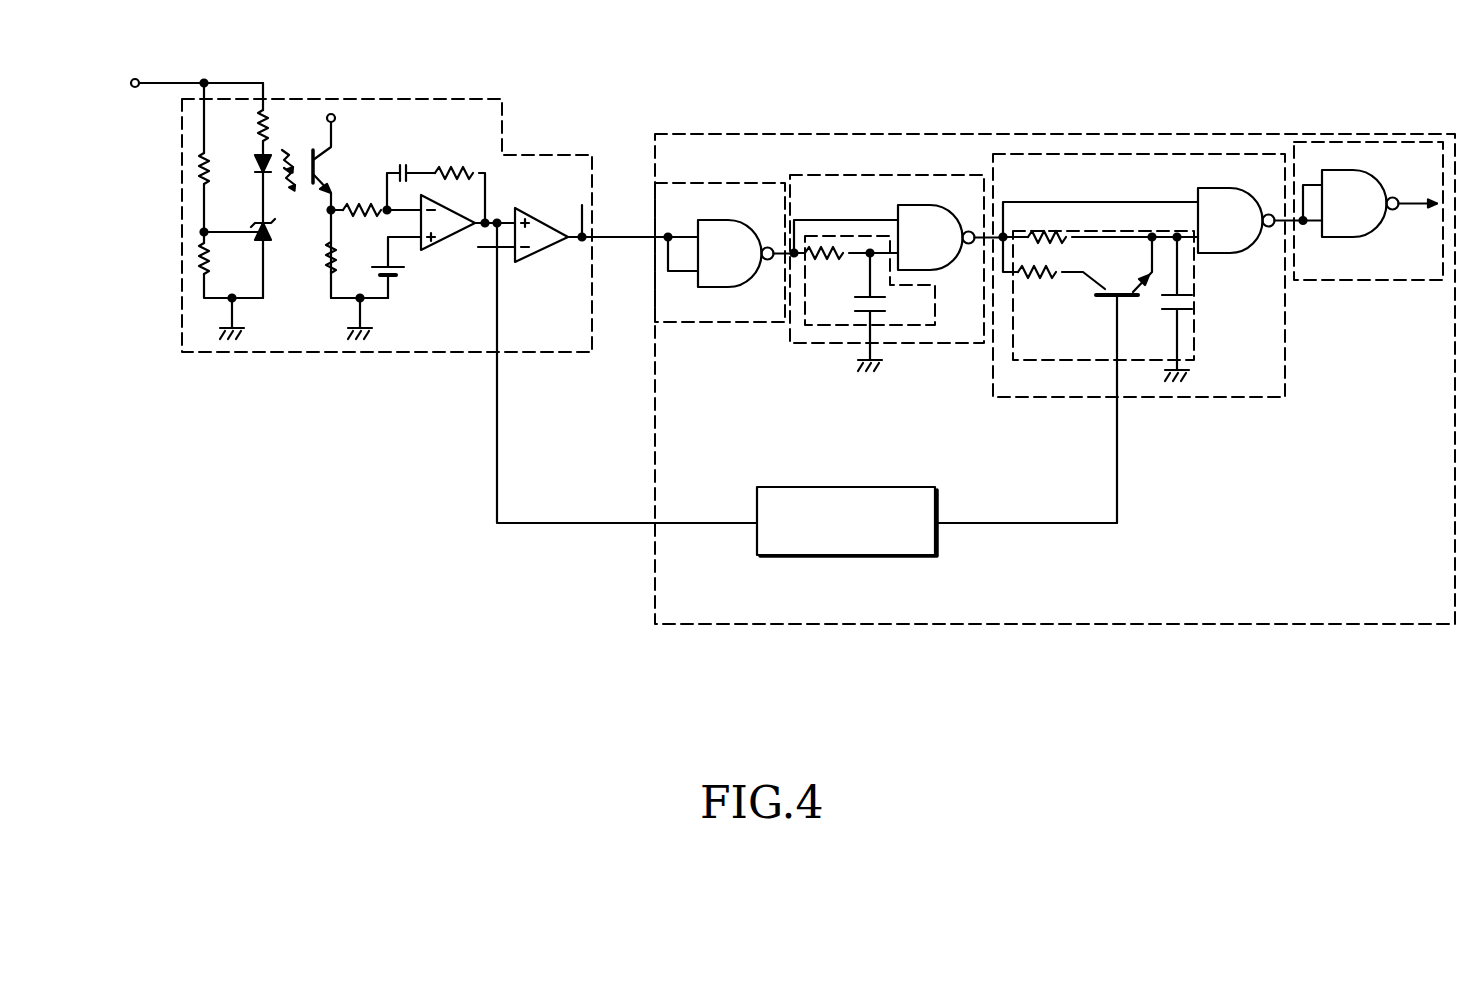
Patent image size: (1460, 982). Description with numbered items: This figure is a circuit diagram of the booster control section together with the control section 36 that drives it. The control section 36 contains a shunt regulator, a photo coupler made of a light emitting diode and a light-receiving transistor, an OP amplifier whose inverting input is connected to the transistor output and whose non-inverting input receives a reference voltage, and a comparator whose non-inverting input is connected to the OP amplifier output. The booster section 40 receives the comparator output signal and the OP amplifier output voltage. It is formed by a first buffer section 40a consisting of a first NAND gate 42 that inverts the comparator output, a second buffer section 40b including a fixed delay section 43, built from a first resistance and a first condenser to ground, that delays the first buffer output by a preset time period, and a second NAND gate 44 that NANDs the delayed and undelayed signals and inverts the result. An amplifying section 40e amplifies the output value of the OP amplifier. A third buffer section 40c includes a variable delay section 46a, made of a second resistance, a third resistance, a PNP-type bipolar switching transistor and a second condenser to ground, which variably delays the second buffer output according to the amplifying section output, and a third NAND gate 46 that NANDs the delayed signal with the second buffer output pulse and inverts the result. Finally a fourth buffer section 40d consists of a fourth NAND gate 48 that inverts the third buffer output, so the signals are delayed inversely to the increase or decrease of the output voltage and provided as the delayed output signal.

The control section 36 is at (305, 352).
The booster section 40 is at (1020, 624).
The first buffer section 40a is at (755, 183).
The second buffer section 40b is at (950, 175).
The third buffer section 40c is at (1107, 154).
The fourth buffer section 40d is at (1375, 142).
The amplifying section 40e is at (828, 555).
The first NAND gate 42 is at (737, 220).
The fixed delay section 43 is at (830, 236).
The second NAND gate 44 is at (935, 205).
The third NAND gate 46 is at (1235, 188).
The variable delay section 46a is at (1194, 340).
The fourth NAND gate 48 is at (1355, 170).